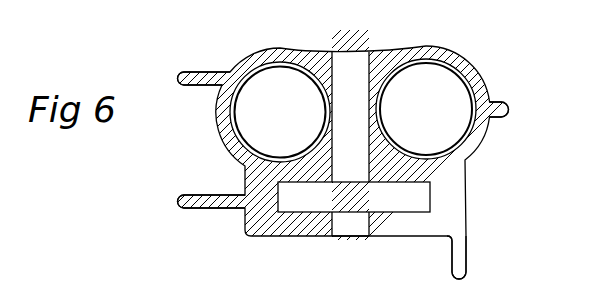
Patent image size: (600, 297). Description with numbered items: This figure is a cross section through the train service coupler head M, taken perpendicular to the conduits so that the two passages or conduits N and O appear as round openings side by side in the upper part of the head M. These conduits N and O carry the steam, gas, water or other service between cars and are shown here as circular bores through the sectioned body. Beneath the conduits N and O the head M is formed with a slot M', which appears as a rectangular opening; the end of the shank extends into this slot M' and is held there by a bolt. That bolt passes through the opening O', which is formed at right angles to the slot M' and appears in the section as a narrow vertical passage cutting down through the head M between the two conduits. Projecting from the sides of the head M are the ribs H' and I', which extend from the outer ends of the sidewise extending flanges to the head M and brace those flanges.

The head M is at (300, 148).
The slot M' is at (354, 224).
The conduit O is at (257, 112).
The conduit N is at (465, 138).
The opening O' is at (372, 128).
The rib H' is at (514, 114).
The rib I' is at (335, 175).